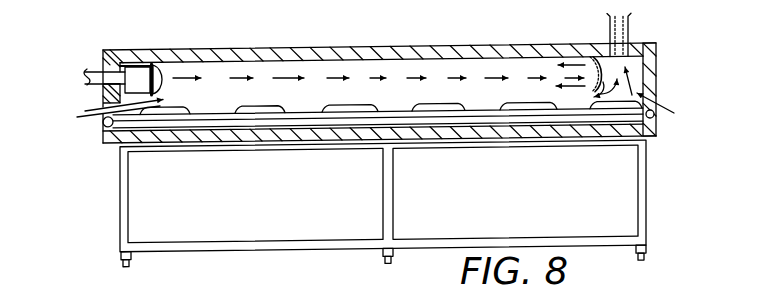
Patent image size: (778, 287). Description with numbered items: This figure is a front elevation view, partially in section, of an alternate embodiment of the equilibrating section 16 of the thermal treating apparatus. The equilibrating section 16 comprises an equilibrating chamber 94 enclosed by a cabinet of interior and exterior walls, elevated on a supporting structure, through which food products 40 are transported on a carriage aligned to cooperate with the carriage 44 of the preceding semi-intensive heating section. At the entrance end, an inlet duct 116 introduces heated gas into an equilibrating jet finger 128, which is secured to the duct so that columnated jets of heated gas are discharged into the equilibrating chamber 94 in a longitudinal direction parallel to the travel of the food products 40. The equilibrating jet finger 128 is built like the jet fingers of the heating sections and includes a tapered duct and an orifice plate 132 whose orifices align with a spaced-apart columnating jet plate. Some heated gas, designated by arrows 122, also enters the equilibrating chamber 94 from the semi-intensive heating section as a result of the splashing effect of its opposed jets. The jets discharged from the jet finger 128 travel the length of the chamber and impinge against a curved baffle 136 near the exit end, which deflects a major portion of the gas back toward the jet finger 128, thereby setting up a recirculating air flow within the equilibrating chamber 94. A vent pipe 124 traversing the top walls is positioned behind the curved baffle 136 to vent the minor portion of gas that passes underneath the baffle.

The equilibrating section 16 is at (71, 80).
The inlet duct 116 is at (100, 73).
The equilibrating jet finger 128 is at (136, 78).
The orifice plate 132 is at (161, 64).
The equilibrating chamber 94 is at (338, 67).
The curved baffle 136 is at (593, 57).
The vent pipe 124 is at (630, 34).
The arrows (heated gas flow) 122 is at (95, 120).
The food products 40 is at (263, 108).
The carriage 44 is at (485, 112).